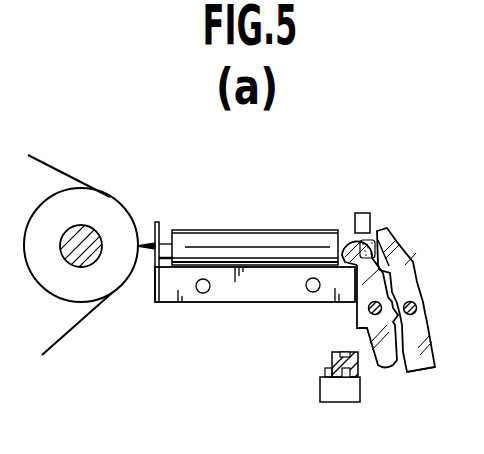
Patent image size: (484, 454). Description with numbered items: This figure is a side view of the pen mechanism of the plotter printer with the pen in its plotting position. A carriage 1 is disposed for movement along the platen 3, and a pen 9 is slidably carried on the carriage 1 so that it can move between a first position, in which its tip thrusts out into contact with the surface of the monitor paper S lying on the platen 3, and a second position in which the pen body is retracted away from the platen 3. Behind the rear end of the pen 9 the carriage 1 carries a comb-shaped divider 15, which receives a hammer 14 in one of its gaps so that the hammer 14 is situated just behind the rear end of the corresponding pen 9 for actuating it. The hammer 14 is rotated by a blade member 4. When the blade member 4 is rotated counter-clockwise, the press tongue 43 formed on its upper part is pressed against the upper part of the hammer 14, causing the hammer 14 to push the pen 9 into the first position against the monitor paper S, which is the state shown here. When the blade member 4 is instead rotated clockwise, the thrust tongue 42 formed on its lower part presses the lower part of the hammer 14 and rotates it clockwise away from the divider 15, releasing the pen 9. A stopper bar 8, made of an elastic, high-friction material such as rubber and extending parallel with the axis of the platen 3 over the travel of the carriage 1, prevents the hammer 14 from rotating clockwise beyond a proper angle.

The monitor paper S is at (62, 170).
The platen 3 is at (113, 208).
The carriage 1 is at (255, 300).
The pen 9 is at (277, 230).
The comb-shaped divider 15 is at (367, 212).
The hammer 14 is at (363, 295).
The blade member 4 is at (413, 287).
The press tongue 43 is at (397, 255).
The thrust tongue 42 is at (408, 375).
The stopper bar 8 is at (337, 377).